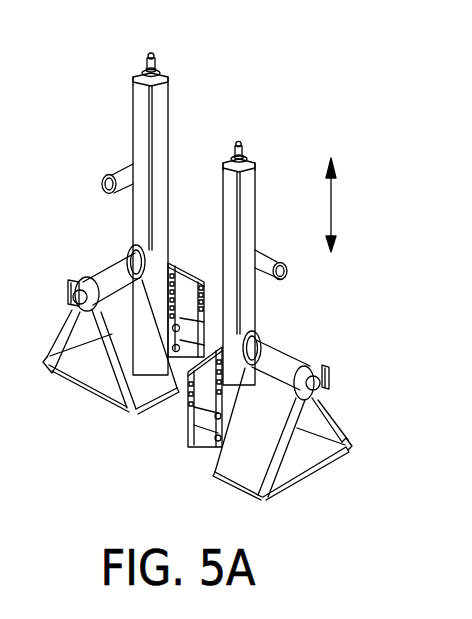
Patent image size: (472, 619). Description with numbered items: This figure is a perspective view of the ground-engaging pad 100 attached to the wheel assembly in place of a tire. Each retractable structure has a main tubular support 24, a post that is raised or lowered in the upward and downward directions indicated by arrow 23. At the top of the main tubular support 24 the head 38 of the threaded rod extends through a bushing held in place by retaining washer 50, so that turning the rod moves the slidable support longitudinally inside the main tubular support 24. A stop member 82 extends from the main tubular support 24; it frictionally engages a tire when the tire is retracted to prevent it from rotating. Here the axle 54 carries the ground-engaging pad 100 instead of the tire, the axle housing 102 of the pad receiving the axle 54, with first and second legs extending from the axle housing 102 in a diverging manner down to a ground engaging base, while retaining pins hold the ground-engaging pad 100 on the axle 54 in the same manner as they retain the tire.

The arrow 23 is at (334, 225).
The main tubular support 24 is at (223, 253).
The head of the threaded rod 38 is at (153, 61).
The retaining washer 50 is at (132, 80).
The axle 54 is at (78, 306).
The stop member 82 is at (127, 162).
The ground-engaging pad 100 is at (84, 402).
The axle housing 102 is at (115, 275).